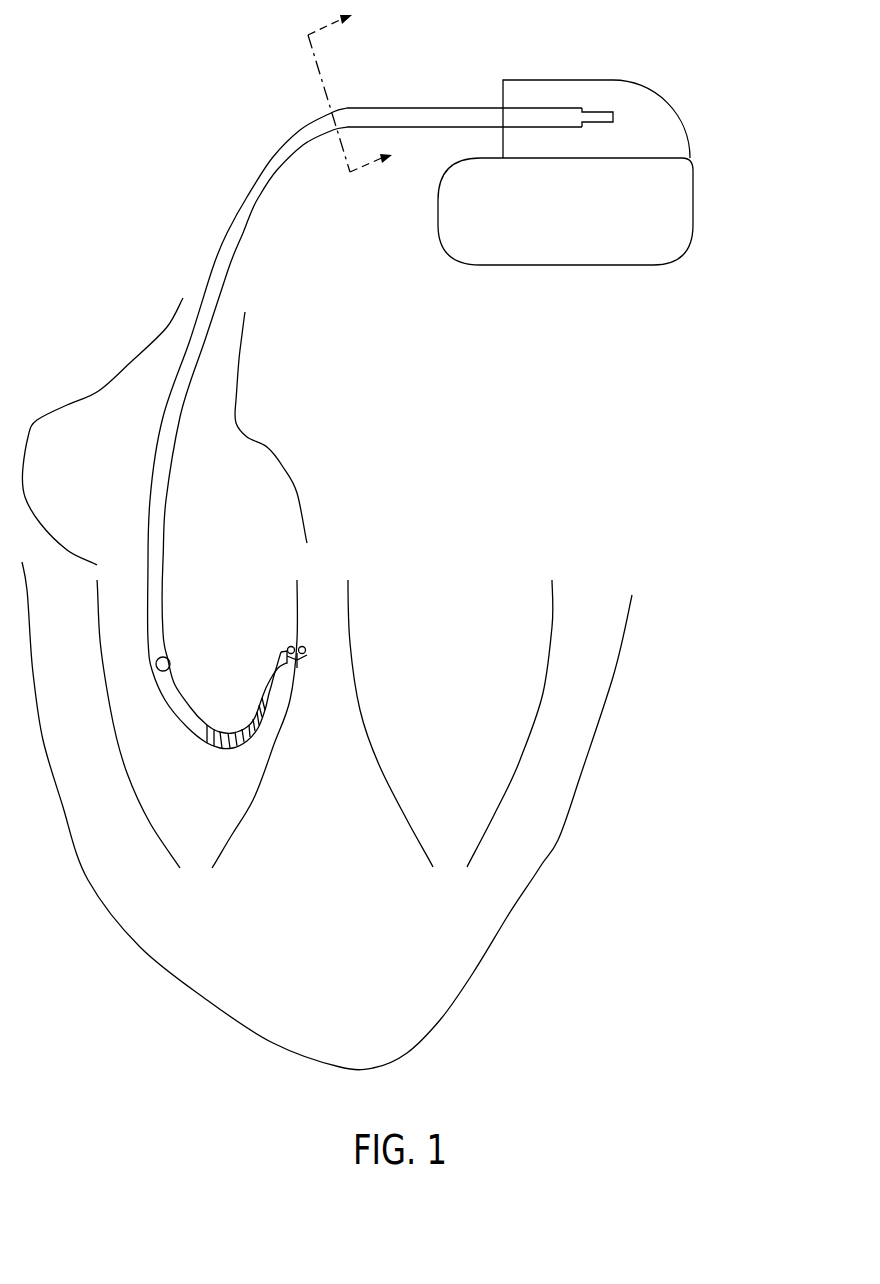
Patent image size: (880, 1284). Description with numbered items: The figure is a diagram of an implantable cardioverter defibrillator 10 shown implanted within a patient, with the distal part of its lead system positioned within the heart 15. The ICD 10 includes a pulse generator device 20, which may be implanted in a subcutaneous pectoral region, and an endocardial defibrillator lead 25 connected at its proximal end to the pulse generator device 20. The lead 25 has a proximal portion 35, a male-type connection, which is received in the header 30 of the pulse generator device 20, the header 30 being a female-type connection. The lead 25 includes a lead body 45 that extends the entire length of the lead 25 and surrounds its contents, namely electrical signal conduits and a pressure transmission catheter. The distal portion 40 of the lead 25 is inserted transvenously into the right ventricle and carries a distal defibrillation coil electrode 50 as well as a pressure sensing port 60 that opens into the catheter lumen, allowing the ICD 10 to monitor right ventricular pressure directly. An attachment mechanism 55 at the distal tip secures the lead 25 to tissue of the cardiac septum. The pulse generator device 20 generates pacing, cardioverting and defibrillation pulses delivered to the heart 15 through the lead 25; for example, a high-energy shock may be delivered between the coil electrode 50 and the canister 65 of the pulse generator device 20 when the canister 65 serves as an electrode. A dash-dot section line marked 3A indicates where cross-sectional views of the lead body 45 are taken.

The implantable cardioverter defibrillator 10 is at (232, 32).
The heart 15 is at (634, 849).
The pulse generator device 20 is at (613, 175).
The endocardial defibrillator lead 25 is at (372, 432).
The header 30 is at (565, 78).
The proximal portion 35 is at (540, 108).
The distal portion 40 is at (235, 714).
The lead body 45 is at (270, 188).
The distal defibrillation coil electrode 50 is at (230, 750).
The attachment mechanism 55 is at (298, 663).
The pressure sensing port 60 is at (168, 657).
The canister 65 is at (483, 267).
The section line for FIGS. 3A, 3B, 3C 3A is at (391, 86).